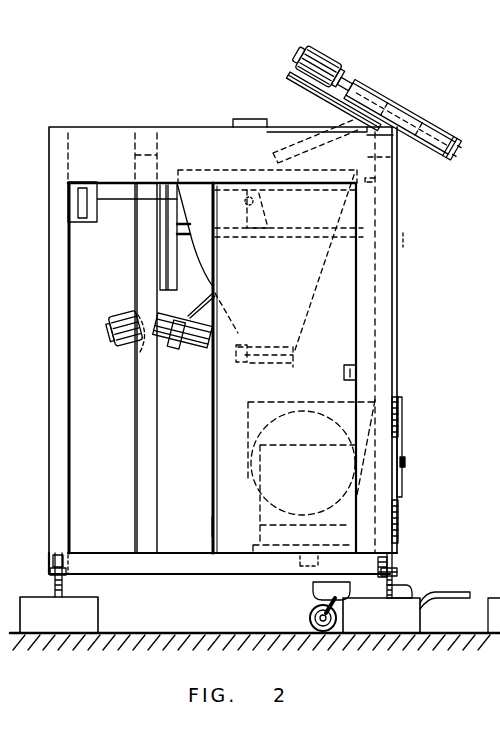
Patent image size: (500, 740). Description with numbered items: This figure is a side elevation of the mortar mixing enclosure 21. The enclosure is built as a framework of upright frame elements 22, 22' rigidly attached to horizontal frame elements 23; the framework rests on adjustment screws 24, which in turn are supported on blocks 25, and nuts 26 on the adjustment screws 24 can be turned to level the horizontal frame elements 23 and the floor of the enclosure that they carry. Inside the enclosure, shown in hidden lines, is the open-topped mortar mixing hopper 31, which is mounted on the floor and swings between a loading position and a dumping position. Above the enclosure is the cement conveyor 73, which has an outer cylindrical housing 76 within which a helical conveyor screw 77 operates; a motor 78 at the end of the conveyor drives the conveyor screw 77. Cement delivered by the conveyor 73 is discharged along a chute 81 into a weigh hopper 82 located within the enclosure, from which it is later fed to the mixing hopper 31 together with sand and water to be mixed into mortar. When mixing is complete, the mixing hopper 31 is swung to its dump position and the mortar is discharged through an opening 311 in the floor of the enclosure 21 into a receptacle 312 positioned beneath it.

The enclosure 21 is at (44, 364).
The upright frame element 22 is at (125, 368).
The side panel 22' is at (84, 368).
The horizontal frame element 23 is at (223, 577).
The adjustment screw 24 is at (65, 585).
The block 25 is at (83, 622).
The nut 26 is at (50, 568).
The mortar mixing hopper 31 is at (345, 404).
The conveyor 73 is at (388, 82).
The outer cylindrical housing 76 is at (450, 147).
The helical conveyor screw 77 is at (443, 120).
The motor 78 is at (322, 52).
The chute 81 is at (325, 117).
The weigh hopper 82 is at (193, 172).
The opening 311 is at (303, 565).
The receptacle 312 is at (316, 595).